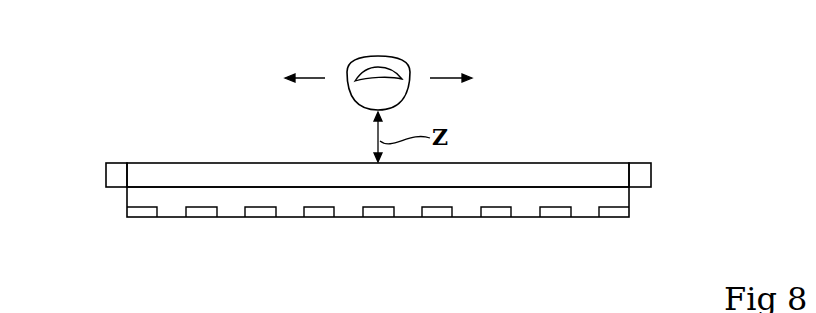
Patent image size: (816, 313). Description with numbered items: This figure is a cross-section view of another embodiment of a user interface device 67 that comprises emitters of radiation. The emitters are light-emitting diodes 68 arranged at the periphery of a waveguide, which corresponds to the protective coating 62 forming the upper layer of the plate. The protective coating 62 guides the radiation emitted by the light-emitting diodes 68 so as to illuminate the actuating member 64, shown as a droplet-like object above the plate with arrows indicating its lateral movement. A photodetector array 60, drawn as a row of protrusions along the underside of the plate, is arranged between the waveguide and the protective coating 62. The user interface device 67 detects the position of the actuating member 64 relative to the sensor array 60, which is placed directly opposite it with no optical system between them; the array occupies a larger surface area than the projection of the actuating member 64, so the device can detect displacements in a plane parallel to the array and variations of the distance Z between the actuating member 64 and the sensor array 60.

The photodetector array 60 is at (202, 218).
The protective coating 62 is at (591, 172).
The actuating member 64 is at (407, 74).
The user interface device 67 is at (106, 107).
The light-emitting diodes 68 is at (118, 177).